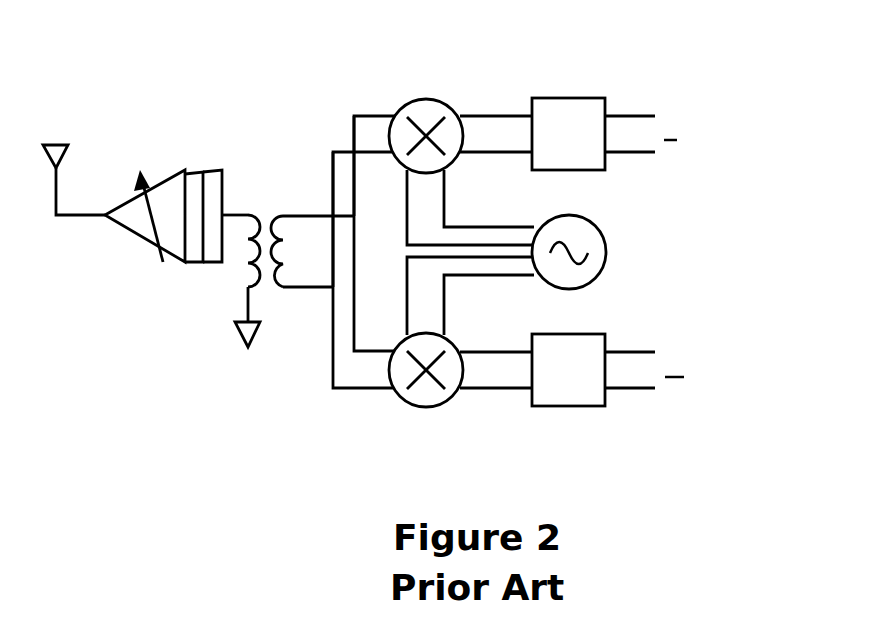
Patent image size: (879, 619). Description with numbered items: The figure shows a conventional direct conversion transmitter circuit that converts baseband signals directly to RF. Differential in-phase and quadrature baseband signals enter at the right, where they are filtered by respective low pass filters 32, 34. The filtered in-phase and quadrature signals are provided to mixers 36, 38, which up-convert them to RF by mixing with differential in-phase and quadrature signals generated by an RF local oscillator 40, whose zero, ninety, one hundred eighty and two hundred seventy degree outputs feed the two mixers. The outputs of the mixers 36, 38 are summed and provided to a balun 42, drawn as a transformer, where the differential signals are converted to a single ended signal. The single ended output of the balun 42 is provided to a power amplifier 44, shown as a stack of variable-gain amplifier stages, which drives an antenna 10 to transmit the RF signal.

The antenna 10 is at (56, 132).
The power amplifier 44 is at (188, 169).
The balun 42 is at (264, 203).
The mixer 36 is at (427, 98).
The mixer 38 is at (426, 407).
The RF local oscillator 40 is at (606, 243).
The low pass filter 32 is at (575, 98).
The low pass filter 34 is at (575, 406).